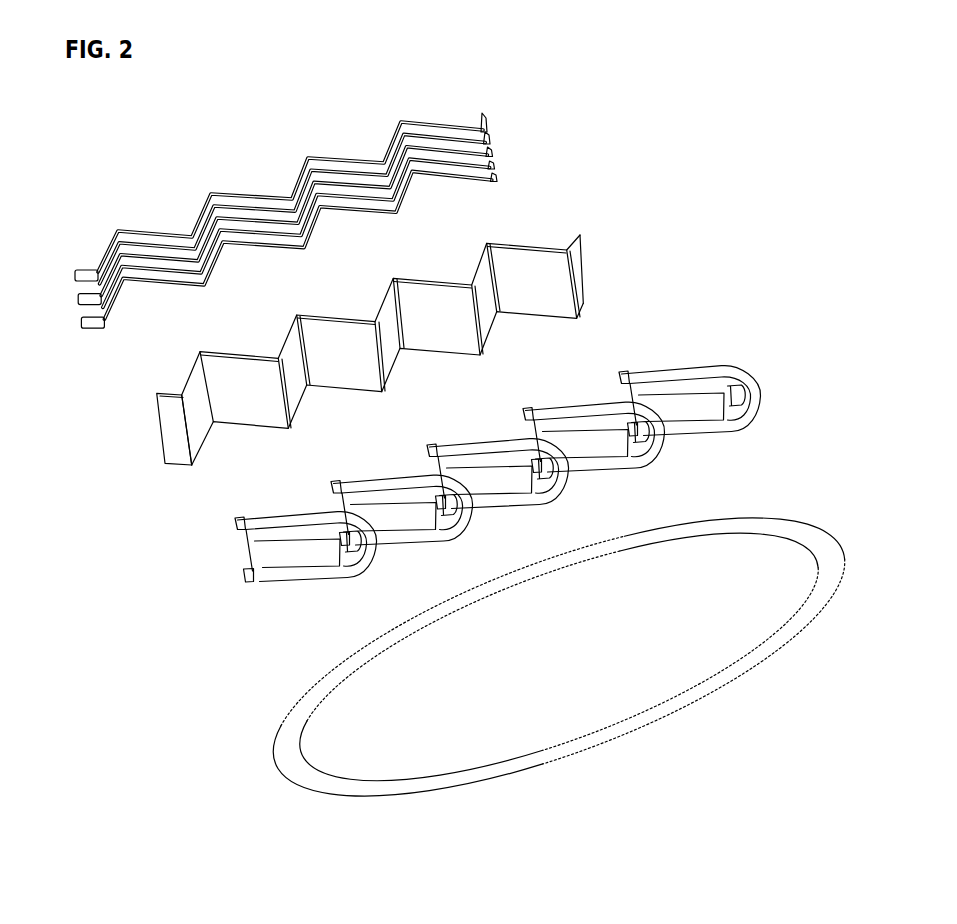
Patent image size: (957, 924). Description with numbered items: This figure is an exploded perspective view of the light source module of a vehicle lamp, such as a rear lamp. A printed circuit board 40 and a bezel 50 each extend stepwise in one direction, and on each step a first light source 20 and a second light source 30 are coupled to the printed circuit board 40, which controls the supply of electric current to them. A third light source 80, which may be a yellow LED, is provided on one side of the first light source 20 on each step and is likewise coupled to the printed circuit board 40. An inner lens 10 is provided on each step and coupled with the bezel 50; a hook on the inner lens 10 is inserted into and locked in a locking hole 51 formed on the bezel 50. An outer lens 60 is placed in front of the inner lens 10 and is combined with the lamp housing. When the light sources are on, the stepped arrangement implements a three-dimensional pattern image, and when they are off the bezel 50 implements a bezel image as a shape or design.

The inner lens 10 is at (673, 378).
The first light source 20 is at (329, 208).
The second light source 30 is at (489, 120).
The printed circuit board 40 is at (338, 160).
The bezel 50 is at (370, 385).
The locking hole 51 is at (201, 443).
The outer lens 60 is at (573, 708).
The third light source 80 is at (329, 208).